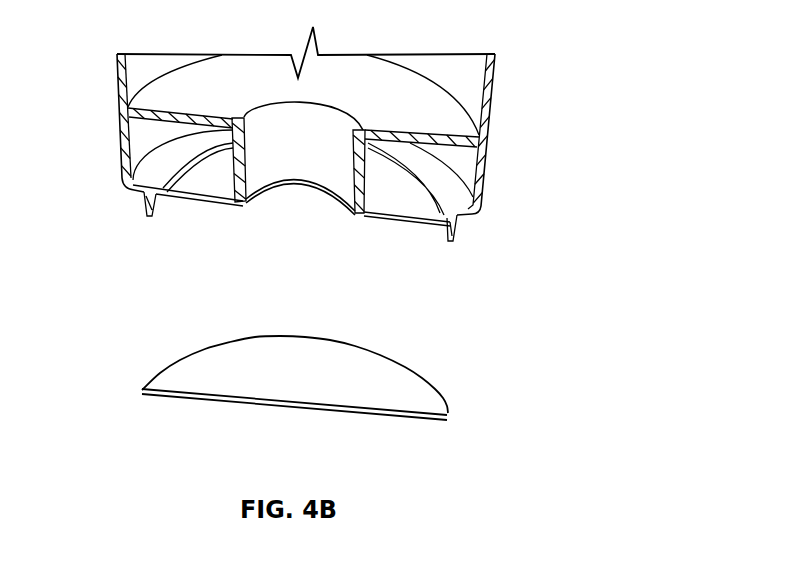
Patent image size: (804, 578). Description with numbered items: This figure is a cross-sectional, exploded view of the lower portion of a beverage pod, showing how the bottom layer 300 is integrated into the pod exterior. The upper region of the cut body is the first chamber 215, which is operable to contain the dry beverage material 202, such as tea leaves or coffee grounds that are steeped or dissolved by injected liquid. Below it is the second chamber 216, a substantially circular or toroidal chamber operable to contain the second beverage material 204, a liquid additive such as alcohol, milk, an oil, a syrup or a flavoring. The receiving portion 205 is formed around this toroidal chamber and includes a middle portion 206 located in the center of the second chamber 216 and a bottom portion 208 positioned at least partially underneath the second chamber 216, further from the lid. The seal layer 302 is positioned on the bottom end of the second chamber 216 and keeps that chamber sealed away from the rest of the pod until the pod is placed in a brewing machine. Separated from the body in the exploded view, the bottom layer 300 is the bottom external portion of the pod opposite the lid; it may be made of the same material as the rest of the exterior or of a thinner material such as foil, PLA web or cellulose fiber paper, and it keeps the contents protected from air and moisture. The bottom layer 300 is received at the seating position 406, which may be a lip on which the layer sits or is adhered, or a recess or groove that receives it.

The dry beverage material 202 is at (463, 78).
The second beverage material 204 is at (456, 161).
The receiving portion 205 is at (347, 202).
The middle portion 206 is at (353, 157).
The bottom portion 208 is at (433, 228).
The first chamber 215 is at (372, 91).
The second chamber 216 is at (418, 165).
The bottom layer 300 is at (238, 355).
The seal layer 302 is at (203, 186).
The seating position 406 is at (150, 213).